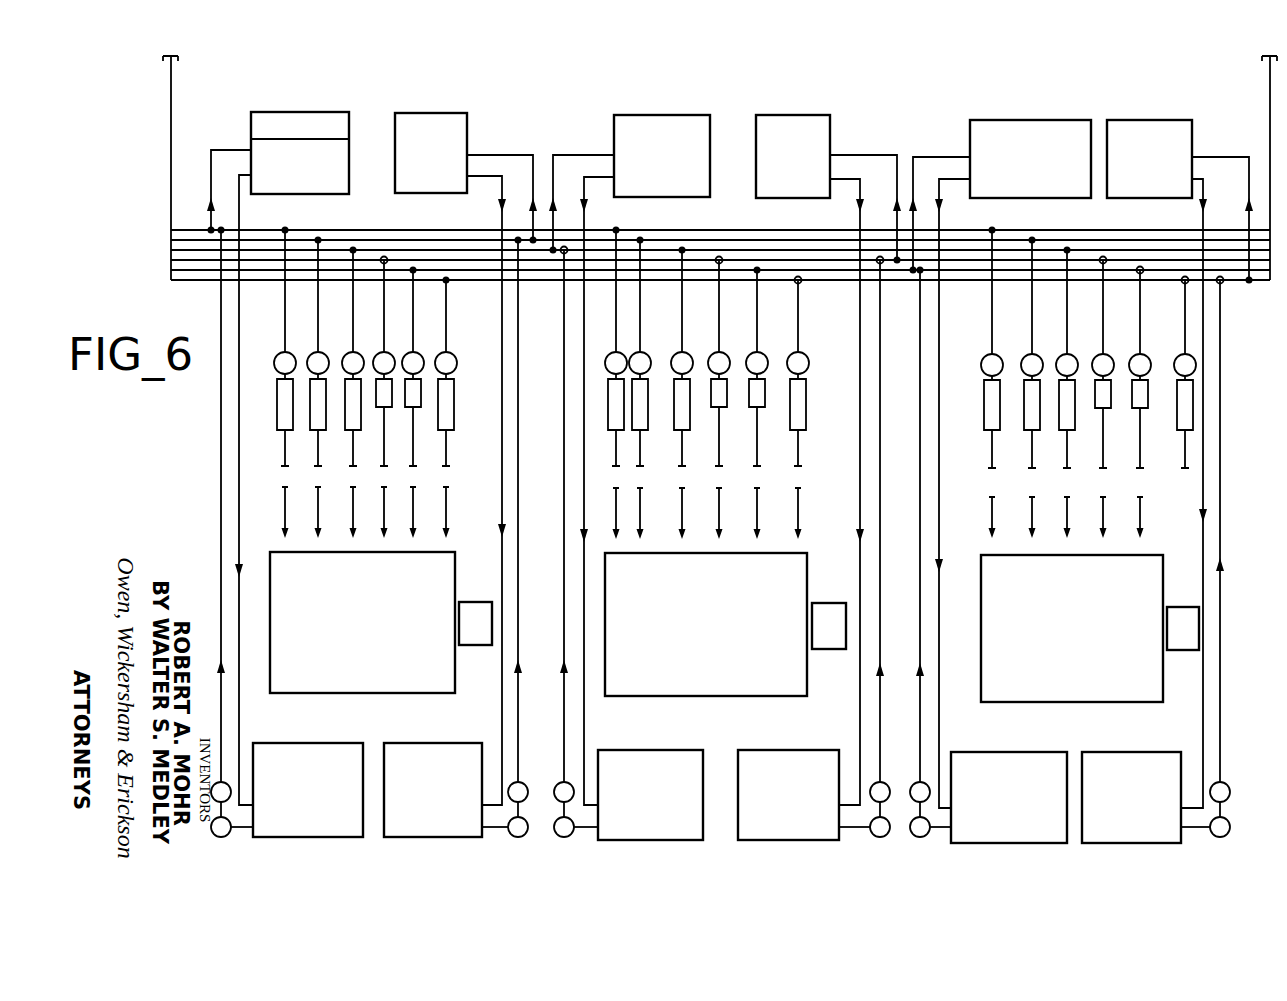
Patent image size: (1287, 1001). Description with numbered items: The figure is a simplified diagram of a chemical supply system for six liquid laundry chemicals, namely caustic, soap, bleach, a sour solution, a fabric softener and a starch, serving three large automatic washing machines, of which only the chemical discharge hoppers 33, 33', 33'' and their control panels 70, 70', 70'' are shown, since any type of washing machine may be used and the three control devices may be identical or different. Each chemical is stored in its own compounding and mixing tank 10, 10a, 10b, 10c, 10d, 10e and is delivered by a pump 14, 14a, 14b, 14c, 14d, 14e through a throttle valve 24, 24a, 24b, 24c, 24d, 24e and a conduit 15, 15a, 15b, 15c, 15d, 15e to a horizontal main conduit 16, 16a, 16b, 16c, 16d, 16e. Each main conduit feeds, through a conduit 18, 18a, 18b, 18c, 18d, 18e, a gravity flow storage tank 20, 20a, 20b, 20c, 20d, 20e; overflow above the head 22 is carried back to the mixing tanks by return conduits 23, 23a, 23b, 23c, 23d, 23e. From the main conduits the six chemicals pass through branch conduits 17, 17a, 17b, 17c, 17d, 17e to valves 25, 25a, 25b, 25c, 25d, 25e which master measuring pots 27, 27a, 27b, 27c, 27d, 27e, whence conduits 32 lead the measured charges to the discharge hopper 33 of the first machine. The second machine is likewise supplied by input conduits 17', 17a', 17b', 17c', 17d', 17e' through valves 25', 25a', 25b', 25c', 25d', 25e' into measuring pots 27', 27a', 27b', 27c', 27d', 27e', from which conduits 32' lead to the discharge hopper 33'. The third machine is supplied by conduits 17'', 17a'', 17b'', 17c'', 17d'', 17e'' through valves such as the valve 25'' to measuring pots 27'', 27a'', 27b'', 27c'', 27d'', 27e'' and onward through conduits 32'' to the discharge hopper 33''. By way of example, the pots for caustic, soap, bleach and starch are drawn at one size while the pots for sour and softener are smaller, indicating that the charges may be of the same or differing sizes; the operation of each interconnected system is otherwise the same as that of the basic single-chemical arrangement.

The compounding and mixing tank 10 is at (282, 745).
The compounding and mixing tank 10a is at (417, 745).
The compounding and mixing tank 10b is at (684, 748).
The compounding and mixing tank 10c is at (777, 748).
The compounding and mixing tank 10d is at (1006, 752).
The compounding and mixing tank 10e is at (1130, 752).
The pump 14 is at (228, 834).
The pump 14a is at (519, 838).
The pump 14b is at (564, 838).
The pump 14c is at (879, 838).
The pump 14d is at (920, 838).
The pump 14e is at (1222, 840).
The conduit 15 is at (218, 698).
The conduit 15a is at (514, 690).
The conduit 15b is at (560, 706).
The conduit 15c is at (881, 707).
The conduit 15d is at (918, 603).
The conduit 15e is at (1224, 720).
The main conduit 16 is at (256, 230).
The main conduit 16a is at (438, 240).
The main conduit 16b is at (604, 250).
The main conduit 16c is at (778, 260).
The main conduit 16d is at (972, 282).
The main conduit 16e is at (1248, 284).
The branch conduit 17 is at (270, 290).
The branch conduit 17a is at (300, 295).
The branch conduit 17b is at (337, 300).
The branch conduit 17c is at (370, 305).
The branch conduit 17d is at (402, 310).
The branch conduit 17e is at (432, 315).
The input conduit 17' is at (603, 290).
The input conduit 17a' is at (658, 295).
The input conduit 17b' is at (696, 300).
The input conduit 17c' is at (735, 305).
The input conduit 17d' is at (771, 310).
The input conduit 17e' is at (810, 315).
The conduit 17'' is at (971, 291).
The conduit 17a'' is at (1010, 296).
The conduit 17b'' is at (1048, 301).
The conduit 17c'' is at (1085, 306).
The conduit 17d'' is at (1122, 311).
The conduit 17e'' is at (1163, 316).
The conduit 18 is at (205, 173).
The conduit 18a is at (505, 153).
The conduit 18b is at (581, 152).
The conduit 18c is at (858, 153).
The conduit 18d is at (942, 153).
The conduit 18e is at (1208, 155).
The gravity flow storage tank 20 is at (310, 110).
The gravity flow storage tank 20a is at (435, 116).
The gravity flow storage tank 20b is at (664, 118).
The gravity flow storage tank 20c is at (802, 118).
The gravity flow storage tank 20d is at (1006, 122).
The gravity flow storage tank 20e is at (1136, 122).
The head 22 is at (332, 139).
The return conduit 23 is at (240, 628).
The return conduit 23a is at (504, 630).
The return conduit 23b is at (585, 703).
The return conduit 23c is at (858, 696).
The return conduit 23d is at (940, 635).
The return conduit 23e is at (1203, 702).
The throttle valve 24 is at (216, 803).
The throttle valve 24a is at (514, 780).
The throttle valve 24b is at (556, 782).
The throttle valve 24c is at (876, 782).
The throttle valve 24d is at (915, 782).
The throttle valve 24e is at (1233, 790).
The valve 25 is at (270, 354).
The valve 25a is at (304, 355).
The valve 25b is at (339, 355).
The valve 25c is at (371, 355).
The valve 25d is at (402, 355).
The valve 25e is at (435, 355).
The valve 25' is at (605, 354).
The valve 25a' is at (652, 351).
The valve 25b' is at (693, 351).
The valve 25c' is at (729, 349).
The valve 25d' is at (769, 351).
The valve 25e' is at (809, 351).
The valve 25'' is at (1069, 368).
The measuring pot 27 is at (269, 420).
The measuring pot 27a is at (303, 420).
The measuring pot 27b is at (339, 420).
The measuring pot 27c is at (372, 420).
The measuring pot 27d is at (402, 420).
The measuring pot 27e is at (462, 420).
The measuring pot 27' is at (603, 420).
The measuring pot 27a' is at (655, 420).
The measuring pot 27b' is at (695, 420).
The measuring pot 27c' is at (732, 420).
The measuring pot 27d' is at (770, 420).
The measuring pot 27e' is at (815, 420).
The measuring pot 27'' is at (974, 422).
The measuring pot 27a'' is at (1014, 422).
The measuring pot 27b'' is at (1050, 422).
The measuring pot 27c'' is at (1086, 422).
The measuring pot 27d'' is at (1124, 422).
The measuring pot 27e'' is at (1166, 422).
The conduit 32 is at (348, 512).
The conduit 32' is at (691, 513).
The conduit 32'' is at (1044, 516).
The discharge hopper 33 is at (362, 622).
The discharge hopper 33' is at (706, 624).
The discharge hopper 33'' is at (1072, 628).
The control panel 70 is at (475, 608).
The control panel 70' is at (829, 609).
The control panel 70'' is at (1183, 609).